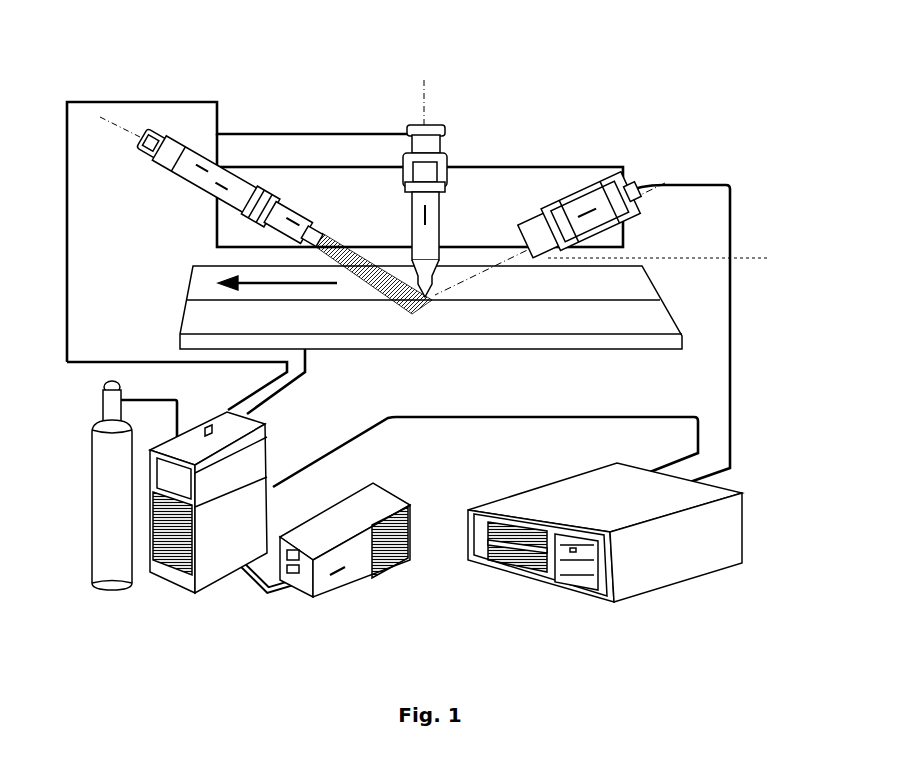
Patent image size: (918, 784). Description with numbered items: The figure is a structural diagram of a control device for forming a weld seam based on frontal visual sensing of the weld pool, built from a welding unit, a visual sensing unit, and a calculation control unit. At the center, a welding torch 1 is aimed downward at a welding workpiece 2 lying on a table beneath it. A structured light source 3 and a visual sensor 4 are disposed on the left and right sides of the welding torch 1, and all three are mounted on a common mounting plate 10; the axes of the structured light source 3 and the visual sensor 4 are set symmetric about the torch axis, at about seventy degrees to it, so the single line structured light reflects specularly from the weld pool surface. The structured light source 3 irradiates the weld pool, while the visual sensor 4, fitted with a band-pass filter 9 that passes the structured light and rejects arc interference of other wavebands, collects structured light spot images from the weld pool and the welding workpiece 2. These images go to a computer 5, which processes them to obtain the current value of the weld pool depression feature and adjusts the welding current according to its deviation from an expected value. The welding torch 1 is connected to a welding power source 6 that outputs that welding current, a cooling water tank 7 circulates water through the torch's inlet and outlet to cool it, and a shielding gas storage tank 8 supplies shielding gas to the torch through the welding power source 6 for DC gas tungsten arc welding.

The welding torch 1 is at (440, 143).
The welding workpiece 2 is at (638, 293).
The structured light source 3 is at (203, 155).
The visual sensor 4 is at (627, 170).
The computer 5 is at (680, 553).
The welding power source 6 is at (212, 567).
The cooling water tank 7 is at (378, 560).
The shielding gas storage tank 8 is at (102, 570).
The band-pass filter 9 is at (676, 258).
The mounting plate 10 is at (498, 178).